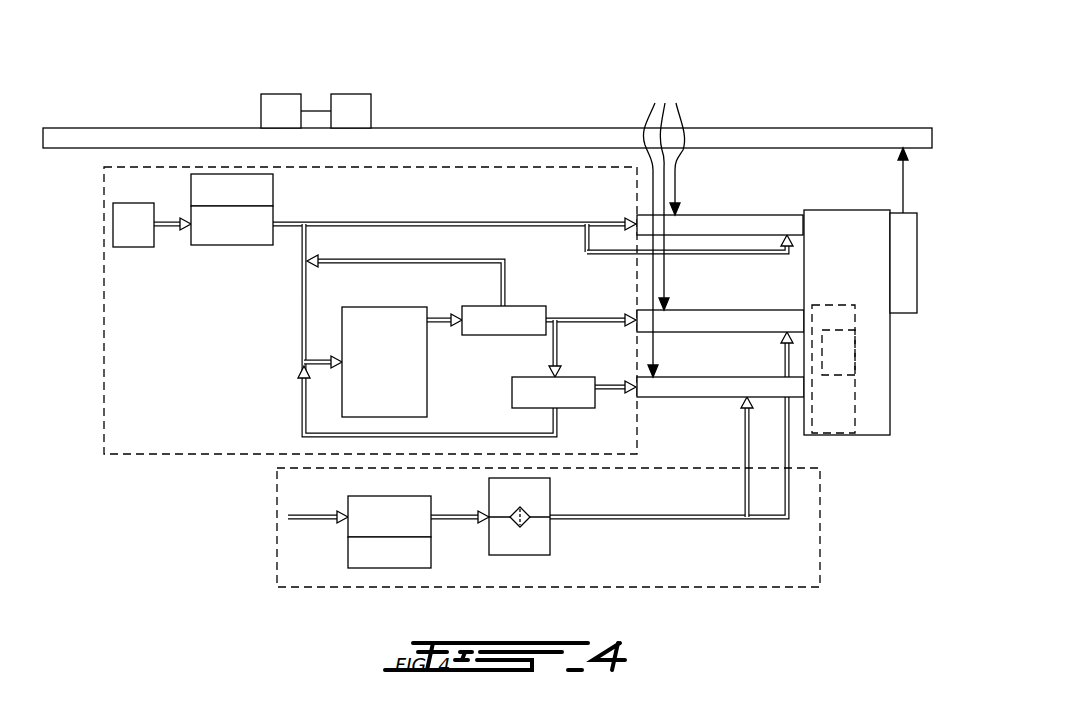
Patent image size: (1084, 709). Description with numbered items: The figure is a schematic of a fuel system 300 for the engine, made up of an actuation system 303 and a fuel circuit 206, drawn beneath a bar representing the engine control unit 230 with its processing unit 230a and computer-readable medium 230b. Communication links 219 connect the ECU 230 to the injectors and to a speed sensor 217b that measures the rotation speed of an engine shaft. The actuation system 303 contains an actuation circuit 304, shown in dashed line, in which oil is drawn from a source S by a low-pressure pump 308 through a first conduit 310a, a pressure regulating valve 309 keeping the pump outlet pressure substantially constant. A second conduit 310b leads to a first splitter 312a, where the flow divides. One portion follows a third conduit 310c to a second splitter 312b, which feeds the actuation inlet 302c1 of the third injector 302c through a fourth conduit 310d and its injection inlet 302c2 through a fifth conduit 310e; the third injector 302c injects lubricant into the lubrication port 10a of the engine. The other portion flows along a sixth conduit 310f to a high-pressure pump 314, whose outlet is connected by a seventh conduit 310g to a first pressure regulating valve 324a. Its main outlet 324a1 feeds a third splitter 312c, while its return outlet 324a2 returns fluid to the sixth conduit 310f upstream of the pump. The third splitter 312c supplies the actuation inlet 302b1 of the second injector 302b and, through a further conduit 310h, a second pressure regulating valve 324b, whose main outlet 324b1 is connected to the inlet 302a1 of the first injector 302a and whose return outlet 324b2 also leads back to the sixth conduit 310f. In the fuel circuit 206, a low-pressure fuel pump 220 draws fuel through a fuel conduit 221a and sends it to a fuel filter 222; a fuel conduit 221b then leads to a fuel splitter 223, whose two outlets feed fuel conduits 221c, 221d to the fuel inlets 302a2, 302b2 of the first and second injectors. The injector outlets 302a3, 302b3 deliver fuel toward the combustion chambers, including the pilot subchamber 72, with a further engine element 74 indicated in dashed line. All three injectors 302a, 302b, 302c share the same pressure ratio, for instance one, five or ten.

The fuel system 300 is at (872, 114).
The engine control unit 230 is at (506, 128).
The processing unit 230a is at (280, 94).
The computer-readable medium 230b is at (354, 94).
The communication links 219 is at (913, 168).
The speed sensor 217b is at (932, 228).
The lubricant port 10a is at (808, 222).
The pilot subchamber 72 is at (845, 387).
The element 74 is at (824, 356).
The third injector 302c is at (715, 215).
The actuation inlet of the third injector 302c1 is at (632, 217).
The injection inlet of the third injector 302c2 is at (788, 232).
The second injector 302b is at (728, 316).
The actuation inlet of the second injector 302b1 is at (680, 310).
The second channel second input 302b2 is at (786, 330).
The second channel output 302b3 is at (805, 320).
The first injector 302a is at (708, 388).
The injection inlet of the first injector 302a1 is at (690, 357).
The first channel second input 302a2 is at (741, 407).
The first channel output 302a3 is at (805, 388).
The actuation circuit 304 is at (103, 330).
The actuation system 303 is at (276, 417).
The source of the actuation fluid S is at (133, 225).
The pressure regulating valve 309 is at (232, 190).
The low-pressure pump 308 is at (232, 225).
The first conduit 310a is at (167, 232).
The second conduit 310b is at (291, 222).
The third conduit 310c is at (398, 222).
The fourth conduit 310d is at (586, 246).
The fifth conduit 310e is at (605, 254).
The sixth conduit 310f is at (300, 320).
The seventh conduit 310g is at (434, 318).
The signal line 310h is at (590, 323).
The first splitter 312a is at (299, 236).
The second splitter 312b is at (586, 211).
The third splitter 312c is at (542, 333).
The high-pressure pump 314 is at (384, 362).
The first pressure regulating valve 324a is at (504, 320).
The main outlet of the first pressure regulating valve 324a1 is at (556, 322).
The return outlet of the first pressure regulating valve 324a2 is at (518, 302).
The second pressure regulating valve 324b is at (553, 392).
The main outlet of the second pressure regulating valve 324b1 is at (598, 393).
The return outlet of the second pressure regulating valve 324b2 is at (553, 412).
The fuel circuit 206 is at (822, 549).
The low-pressure fuel pump 220 is at (389, 532).
The fuel conduit 221a is at (312, 522).
The fuel conduit 221b is at (613, 522).
The fuel conduit 221c is at (745, 487).
The fuel conduit 221d is at (787, 452).
The fuel filter 222 is at (552, 497).
The fuel splitter 223 is at (741, 526).